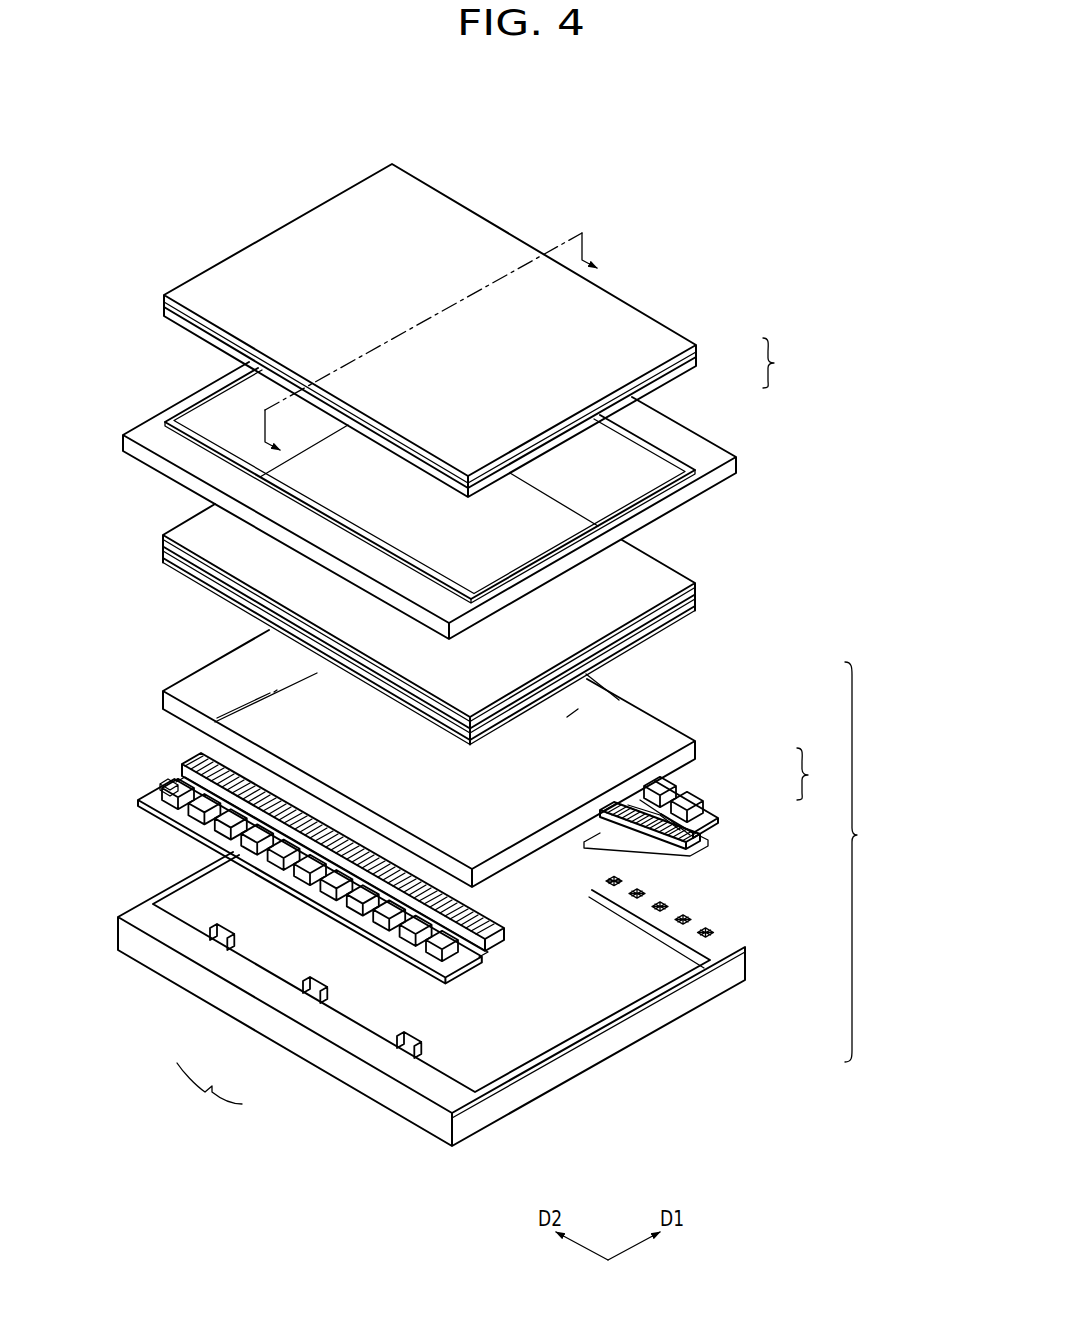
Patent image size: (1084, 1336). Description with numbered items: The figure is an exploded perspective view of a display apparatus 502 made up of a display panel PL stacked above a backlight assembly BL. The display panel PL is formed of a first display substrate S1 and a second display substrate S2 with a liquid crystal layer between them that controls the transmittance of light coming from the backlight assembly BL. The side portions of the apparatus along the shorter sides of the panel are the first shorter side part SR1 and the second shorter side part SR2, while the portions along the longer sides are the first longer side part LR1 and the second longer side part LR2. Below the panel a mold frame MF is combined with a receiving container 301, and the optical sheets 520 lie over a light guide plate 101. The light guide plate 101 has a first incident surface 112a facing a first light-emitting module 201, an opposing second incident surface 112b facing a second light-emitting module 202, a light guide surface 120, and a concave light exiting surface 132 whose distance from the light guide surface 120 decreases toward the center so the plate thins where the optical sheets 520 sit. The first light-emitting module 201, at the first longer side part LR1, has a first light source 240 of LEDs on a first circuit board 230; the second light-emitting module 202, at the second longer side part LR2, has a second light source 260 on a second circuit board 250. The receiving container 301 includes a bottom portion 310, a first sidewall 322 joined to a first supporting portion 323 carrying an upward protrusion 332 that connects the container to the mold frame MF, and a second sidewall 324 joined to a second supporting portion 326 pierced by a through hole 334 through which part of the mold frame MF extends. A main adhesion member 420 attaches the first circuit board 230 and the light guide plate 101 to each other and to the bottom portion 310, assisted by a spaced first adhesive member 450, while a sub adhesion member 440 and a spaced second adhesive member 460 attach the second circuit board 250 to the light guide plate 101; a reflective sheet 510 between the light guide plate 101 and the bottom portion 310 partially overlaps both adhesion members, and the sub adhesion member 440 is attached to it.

The display apparatus 502 is at (539, 210).
The first display substrate S1 is at (698, 360).
The second display substrate S2 is at (698, 348).
The display panel PL is at (783, 363).
The mold frame MF is at (740, 440).
The optical sheets 520 is at (705, 590).
The light guide plate 101 is at (438, 835).
The first incident surface 112a is at (323, 796).
The second incident surface 112b is at (654, 715).
The light exiting surface 132 is at (316, 675).
The first light-emitting module 201 is at (310, 946).
The first circuit board 230 is at (302, 872).
The first light source 240 is at (380, 900).
The second light-emitting module 202 is at (744, 790).
The second circuit board 250 is at (720, 816).
The second light source 260 is at (690, 795).
The main adhesion member 420 is at (522, 868).
The first adhesive member 450 is at (478, 935).
The sub adhesion member 440 is at (665, 855).
The second adhesive member 460 is at (692, 850).
The receiving container 301 is at (480, 1002).
The bottom portion 310 is at (650, 985).
The first sidewall 322 is at (323, 1058).
The first supporting portion 323 is at (379, 1054).
The protrusion 332 is at (408, 1056).
The second supporting portion 326 is at (700, 922).
The second sidewall 324 is at (704, 928).
The through hole 334 is at (709, 936).
The reflective sheet 510 is at (643, 968).
The light guide surface 120 is at (555, 882).
The first longer side part LR1 is at (243, 1113).
The second longer side part LR2 is at (667, 887).
The first shorter side part SR1 is at (683, 1094).
The second shorter side part SR2 is at (171, 866).
The backlight assembly BL is at (864, 862).